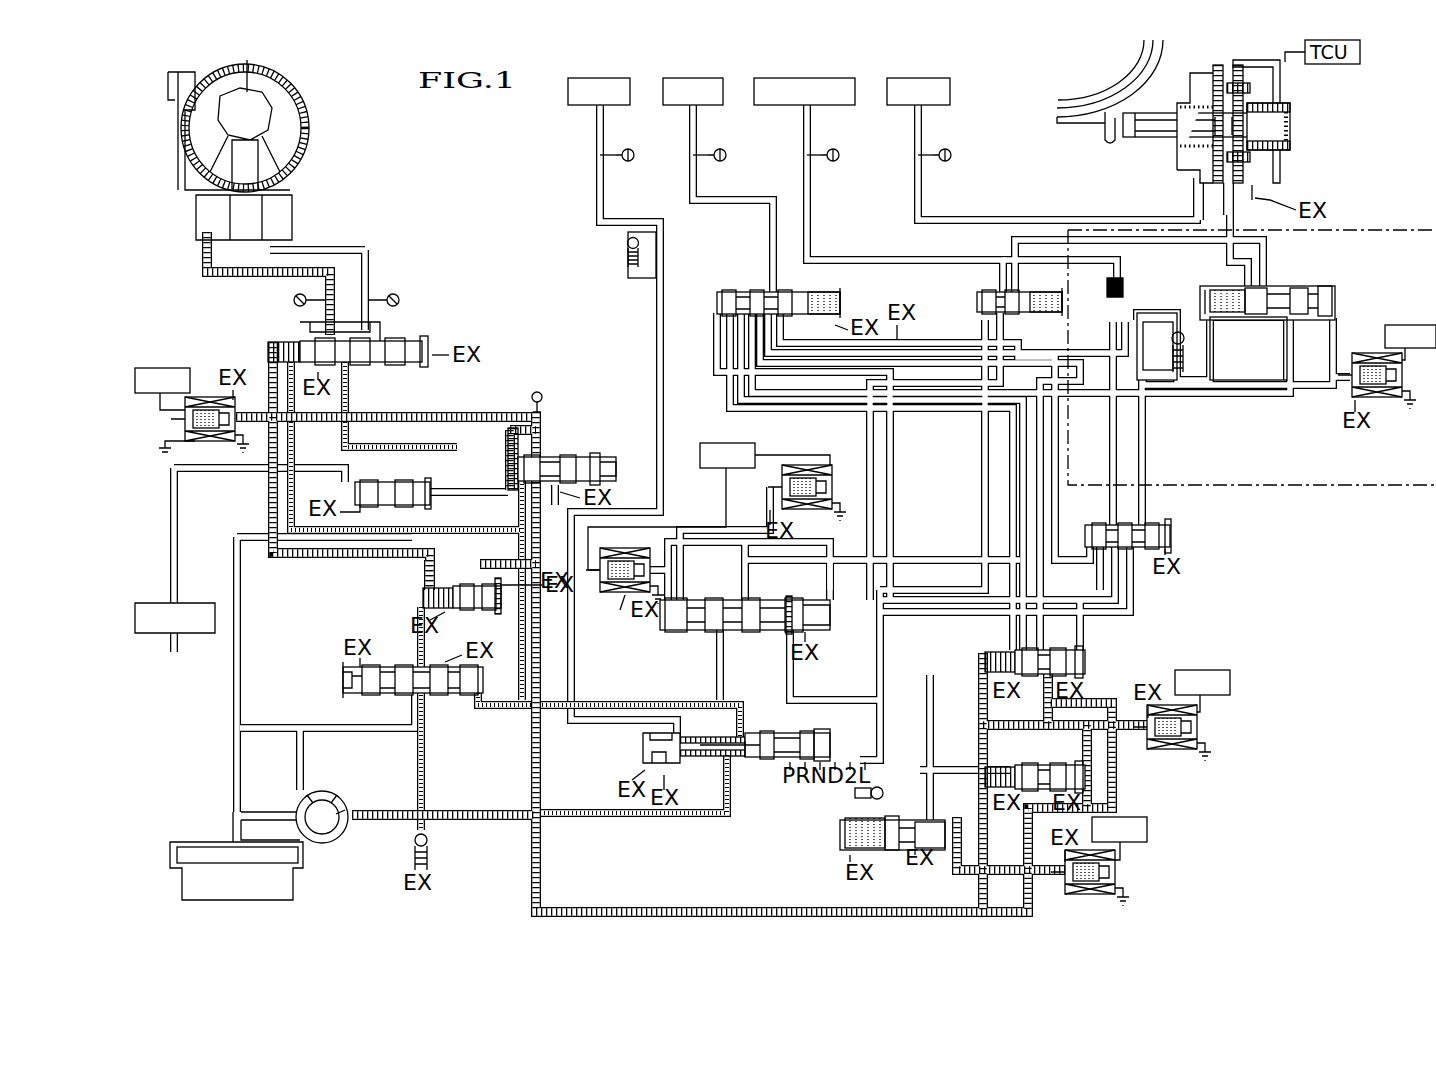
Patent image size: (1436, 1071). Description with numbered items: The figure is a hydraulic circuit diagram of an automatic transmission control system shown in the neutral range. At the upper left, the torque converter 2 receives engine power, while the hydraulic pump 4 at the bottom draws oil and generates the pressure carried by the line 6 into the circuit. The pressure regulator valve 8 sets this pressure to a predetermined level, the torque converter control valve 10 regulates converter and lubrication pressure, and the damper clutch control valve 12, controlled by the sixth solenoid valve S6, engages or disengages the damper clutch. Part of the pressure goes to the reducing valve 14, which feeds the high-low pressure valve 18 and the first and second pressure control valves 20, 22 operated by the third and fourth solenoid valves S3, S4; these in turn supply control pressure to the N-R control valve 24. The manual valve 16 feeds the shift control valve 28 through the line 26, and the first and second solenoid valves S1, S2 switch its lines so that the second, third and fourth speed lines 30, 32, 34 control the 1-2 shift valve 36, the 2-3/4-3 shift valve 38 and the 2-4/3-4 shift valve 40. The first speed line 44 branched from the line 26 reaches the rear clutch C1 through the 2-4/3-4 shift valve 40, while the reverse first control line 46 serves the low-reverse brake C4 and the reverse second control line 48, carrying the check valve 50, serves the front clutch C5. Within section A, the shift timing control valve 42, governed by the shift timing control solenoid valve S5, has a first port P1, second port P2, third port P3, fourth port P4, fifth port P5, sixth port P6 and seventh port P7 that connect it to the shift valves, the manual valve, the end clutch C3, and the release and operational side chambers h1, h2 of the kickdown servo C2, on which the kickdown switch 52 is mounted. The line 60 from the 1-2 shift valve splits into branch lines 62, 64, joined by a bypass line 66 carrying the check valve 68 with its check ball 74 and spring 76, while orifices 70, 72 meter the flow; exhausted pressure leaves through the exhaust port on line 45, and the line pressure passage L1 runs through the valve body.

The torque converter 2 is at (325, 80).
The hydraulic pump 4 is at (325, 845).
The line pressure passage 6 is at (380, 812).
The pressure regulator valve 8 is at (340, 680).
The torque converter control valve 10 is at (432, 493).
The damper clutch control valve 12 is at (445, 330).
The reducing valve 14 is at (582, 452).
The manual valve 16 is at (640, 745).
The high-low pressure valve 18 is at (458, 582).
The first pressure control valve 20 is at (985, 778).
The second pressure control valve 22 is at (1088, 662).
The N-R control valve 24 is at (840, 835).
The line 26 is at (752, 665).
The shift control valve 28 is at (690, 632).
The second speed line 30 is at (855, 555).
The third speed line 32 is at (978, 450).
The fourth speed line 34 is at (893, 512).
The 1-2 shift valve 36 is at (1176, 538).
The 2-3/4-3 shift valve 38 is at (975, 297).
The 2-4/3-4 shift valve 40 is at (742, 290).
The shift timing control valve 42 is at (1318, 292).
The first speed line 44 is at (883, 700).
The line 45 is at (875, 340).
The reverse first control line 46 is at (915, 770).
The reverse second control line 48 is at (655, 332).
The check valve 50 is at (620, 256).
The kickdown switch 52 is at (1295, 100).
The line 60 is at (1147, 470).
The branch line 62 is at (1108, 350).
The branch line 64 is at (1270, 380).
The bypass line 66 is at (1140, 320).
The check valve 68 is at (1172, 336).
The orifice 70 is at (1140, 352).
The orifice 72 is at (1282, 385).
The check ball 74 is at (1185, 330).
The spring 76 is at (1183, 353).
The release side chamber h1 is at (1195, 170).
The operational side chamber h2 is at (1245, 160).
The section A is at (1387, 230).
The rear clutch C1 is at (693, 78).
The kickdown servo C2 is at (1160, 155).
The end clutch C3 is at (918, 78).
The low-reverse brake C4 is at (807, 78).
The front clutch C5 is at (600, 78).
The line pressure passage L1 is at (1058, 503).
The first port P1 is at (1280, 325).
The second port P2 is at (1305, 328).
The third port P3 is at (1330, 316).
The fourth port P4 is at (1258, 288).
The fifth port P5 is at (1272, 286).
The sixth port P6 is at (1300, 286).
The seventh port P7 is at (1218, 325).
The first solenoid valve S1 is at (800, 465).
The second solenoid valve S2 is at (620, 595).
The third solenoid valve S3 is at (1120, 872).
The fourth solenoid valve S4 is at (1205, 727).
The shift timing control solenoid valve S5 is at (1386, 405).
The sixth solenoid valve S6 is at (210, 385).